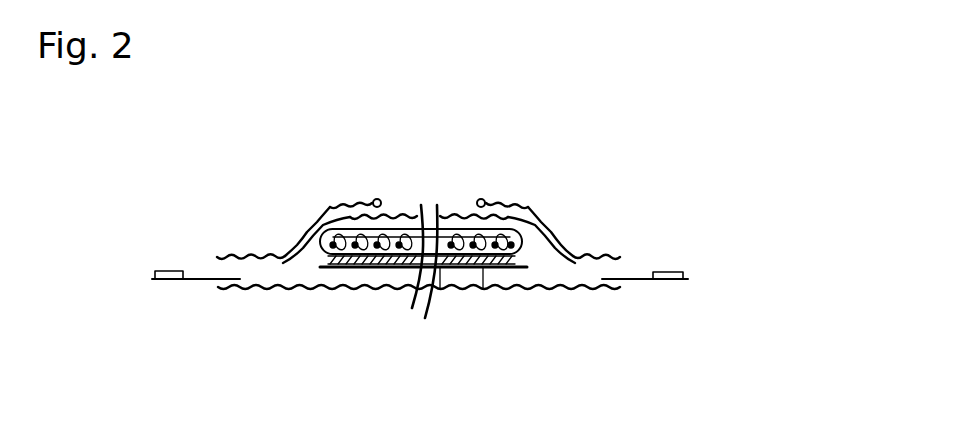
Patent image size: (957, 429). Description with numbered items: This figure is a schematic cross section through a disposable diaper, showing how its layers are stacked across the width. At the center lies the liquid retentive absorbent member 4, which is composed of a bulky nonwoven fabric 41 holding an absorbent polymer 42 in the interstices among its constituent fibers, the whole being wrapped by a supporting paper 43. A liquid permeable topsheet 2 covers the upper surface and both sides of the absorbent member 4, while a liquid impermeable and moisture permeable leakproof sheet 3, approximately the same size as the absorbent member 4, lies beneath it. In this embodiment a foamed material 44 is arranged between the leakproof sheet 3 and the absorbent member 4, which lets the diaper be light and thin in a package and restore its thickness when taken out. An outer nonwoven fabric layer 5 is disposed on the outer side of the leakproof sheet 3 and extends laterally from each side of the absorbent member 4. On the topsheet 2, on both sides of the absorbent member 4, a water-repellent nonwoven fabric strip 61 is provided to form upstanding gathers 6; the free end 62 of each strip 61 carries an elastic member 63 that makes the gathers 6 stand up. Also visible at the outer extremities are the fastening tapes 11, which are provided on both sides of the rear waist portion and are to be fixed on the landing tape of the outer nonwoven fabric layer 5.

The topsheet 2 is at (449, 216).
The leakproof sheet 3 is at (332, 268).
The absorbent member 4 is at (333, 345).
The bulky nonwoven fabric 41 is at (361, 268).
The absorbent polymer 42 is at (408, 268).
The supporting paper 43 is at (463, 268).
The foamed material 44 is at (487, 304).
The outer nonwoven fabric layer 5 is at (272, 289).
The upstanding gathers 6 is at (262, 131).
The water-repellent nonwoven fabric strip 61 is at (324, 214).
The free end 62 is at (381, 201).
The elastic member 63 is at (373, 201).
The fastening tapes 11 is at (195, 281).